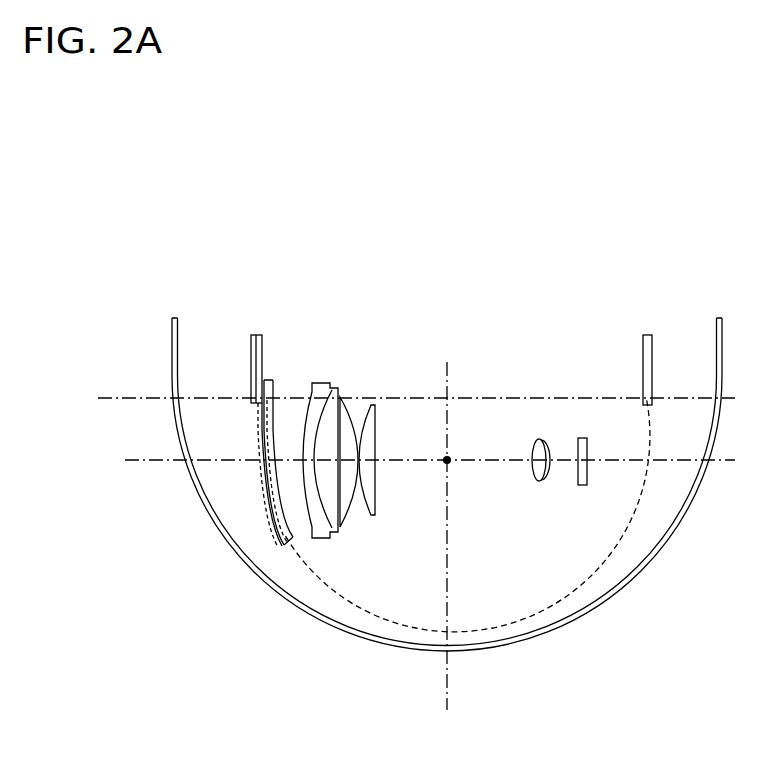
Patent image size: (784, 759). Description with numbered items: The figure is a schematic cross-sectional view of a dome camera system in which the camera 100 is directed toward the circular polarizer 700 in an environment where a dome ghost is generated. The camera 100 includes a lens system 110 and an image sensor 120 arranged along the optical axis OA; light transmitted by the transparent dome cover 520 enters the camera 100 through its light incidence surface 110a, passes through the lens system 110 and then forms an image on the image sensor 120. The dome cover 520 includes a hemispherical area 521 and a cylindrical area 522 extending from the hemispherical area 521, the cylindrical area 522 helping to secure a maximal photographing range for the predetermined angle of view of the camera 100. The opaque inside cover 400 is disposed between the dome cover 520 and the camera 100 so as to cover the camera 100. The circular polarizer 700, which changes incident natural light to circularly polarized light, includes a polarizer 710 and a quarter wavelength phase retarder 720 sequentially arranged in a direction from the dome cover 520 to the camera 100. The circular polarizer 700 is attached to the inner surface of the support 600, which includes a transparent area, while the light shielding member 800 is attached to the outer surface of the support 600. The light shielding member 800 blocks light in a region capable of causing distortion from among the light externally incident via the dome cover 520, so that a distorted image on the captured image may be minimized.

The camera 100 is at (391, 428).
The lens system 110 is at (372, 453).
The light incidence surface 110a is at (305, 503).
The image sensor 120 is at (582, 392).
The inside cover 400 is at (562, 600).
The dome cover 520 is at (382, 484).
The hemispherical area 521 is at (433, 513).
The cylindrical area 522 is at (172, 351).
The support 600 is at (262, 334).
The circular polarizer 700 is at (317, 373).
The polarizer 710 is at (269, 381).
The ¼ wavelength phase retarder 720 is at (274, 383).
The light shielding member 800 is at (253, 335).
The optical axis OA is at (152, 459).